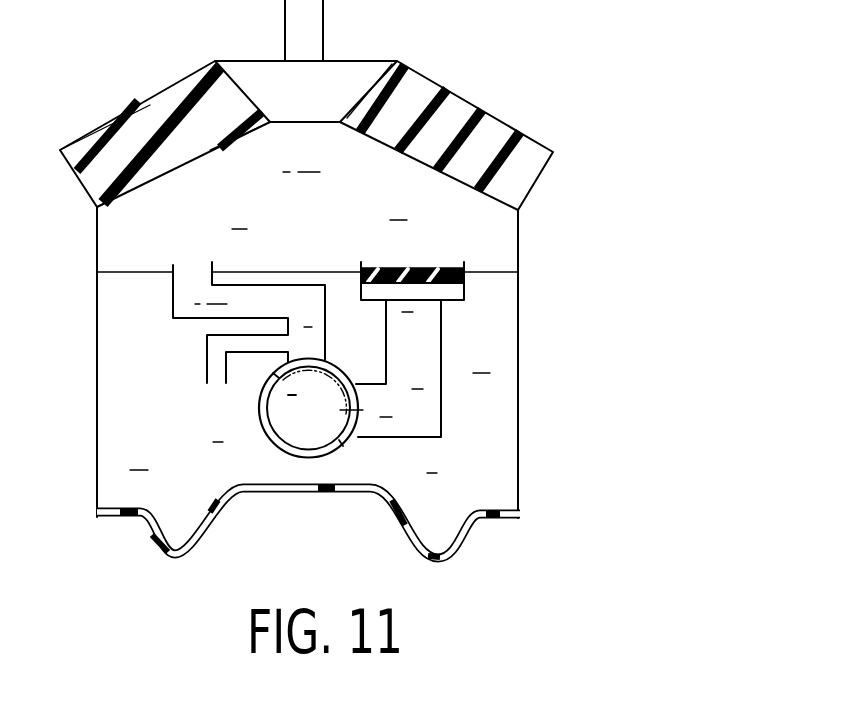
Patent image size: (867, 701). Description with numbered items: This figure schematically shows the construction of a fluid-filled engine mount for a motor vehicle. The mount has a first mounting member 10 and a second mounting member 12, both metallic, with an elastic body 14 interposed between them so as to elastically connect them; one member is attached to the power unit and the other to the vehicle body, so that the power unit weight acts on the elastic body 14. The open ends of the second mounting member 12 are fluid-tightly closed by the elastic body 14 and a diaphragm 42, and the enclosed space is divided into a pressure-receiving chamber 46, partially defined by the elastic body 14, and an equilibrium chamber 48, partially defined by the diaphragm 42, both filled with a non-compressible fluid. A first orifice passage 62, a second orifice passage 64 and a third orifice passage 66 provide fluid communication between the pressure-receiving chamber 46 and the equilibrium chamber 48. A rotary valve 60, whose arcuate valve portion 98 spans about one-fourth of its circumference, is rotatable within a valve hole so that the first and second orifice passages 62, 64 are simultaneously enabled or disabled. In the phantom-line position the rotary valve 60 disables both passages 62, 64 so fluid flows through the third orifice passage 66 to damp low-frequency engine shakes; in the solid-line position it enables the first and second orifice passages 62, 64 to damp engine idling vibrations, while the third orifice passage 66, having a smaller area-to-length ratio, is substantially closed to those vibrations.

The first mounting member 10 is at (355, 76).
The second mounting member 12 is at (74, 417).
The elastic body 14 is at (170, 110).
The diaphragm 42 is at (457, 545).
The pressure-receiving chamber 46 is at (355, 192).
The equilibrium chamber 48 is at (194, 434).
The rotary valve 60 is at (316, 490).
The first orifice passage 62 is at (430, 343).
The second orifice passage 64 is at (245, 295).
The third orifice passage 66 is at (247, 345).
The arcuate valve portion 98 is at (295, 456).